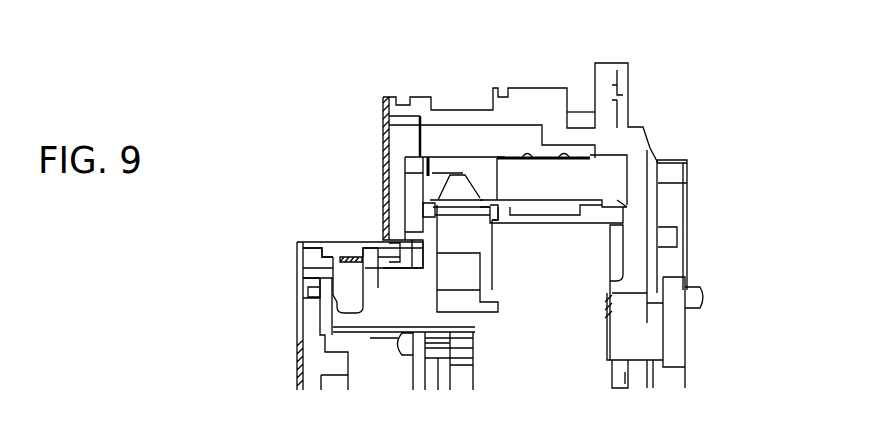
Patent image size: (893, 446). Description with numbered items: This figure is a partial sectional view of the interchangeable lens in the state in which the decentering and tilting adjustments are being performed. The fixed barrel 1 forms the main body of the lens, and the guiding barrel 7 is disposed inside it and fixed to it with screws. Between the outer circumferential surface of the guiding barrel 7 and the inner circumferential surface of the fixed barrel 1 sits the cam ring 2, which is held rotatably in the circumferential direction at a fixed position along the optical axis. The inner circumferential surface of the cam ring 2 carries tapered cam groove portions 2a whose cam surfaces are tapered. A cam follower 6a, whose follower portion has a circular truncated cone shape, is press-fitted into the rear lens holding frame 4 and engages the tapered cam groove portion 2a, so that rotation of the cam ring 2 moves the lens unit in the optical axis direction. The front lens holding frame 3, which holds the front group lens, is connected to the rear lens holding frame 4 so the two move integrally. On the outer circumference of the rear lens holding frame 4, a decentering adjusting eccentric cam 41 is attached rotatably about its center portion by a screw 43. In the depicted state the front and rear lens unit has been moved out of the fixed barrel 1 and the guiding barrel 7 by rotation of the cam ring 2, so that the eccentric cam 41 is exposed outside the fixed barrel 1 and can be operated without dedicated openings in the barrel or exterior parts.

The fixed barrel 1 is at (536, 90).
The cam ring 2 is at (607, 177).
The tapered cam groove portion 2a is at (468, 173).
The cam follower 6a is at (461, 177).
The guiding barrel 7 is at (605, 218).
The rear lens holding frame 4 is at (393, 290).
The decentering adjusting eccentric cam 41 is at (323, 242).
The screw 43 is at (348, 288).
The front lens holding frame 3 is at (303, 305).